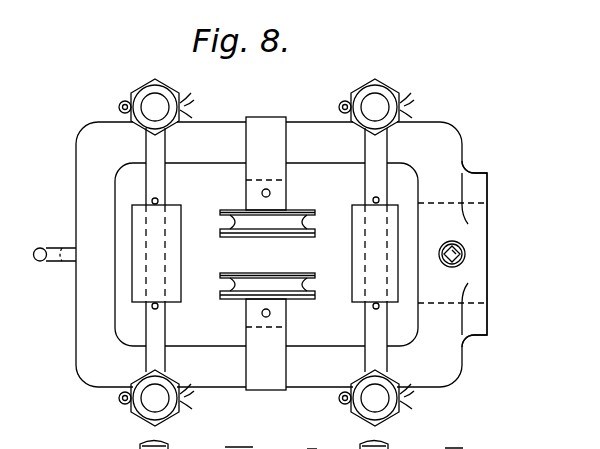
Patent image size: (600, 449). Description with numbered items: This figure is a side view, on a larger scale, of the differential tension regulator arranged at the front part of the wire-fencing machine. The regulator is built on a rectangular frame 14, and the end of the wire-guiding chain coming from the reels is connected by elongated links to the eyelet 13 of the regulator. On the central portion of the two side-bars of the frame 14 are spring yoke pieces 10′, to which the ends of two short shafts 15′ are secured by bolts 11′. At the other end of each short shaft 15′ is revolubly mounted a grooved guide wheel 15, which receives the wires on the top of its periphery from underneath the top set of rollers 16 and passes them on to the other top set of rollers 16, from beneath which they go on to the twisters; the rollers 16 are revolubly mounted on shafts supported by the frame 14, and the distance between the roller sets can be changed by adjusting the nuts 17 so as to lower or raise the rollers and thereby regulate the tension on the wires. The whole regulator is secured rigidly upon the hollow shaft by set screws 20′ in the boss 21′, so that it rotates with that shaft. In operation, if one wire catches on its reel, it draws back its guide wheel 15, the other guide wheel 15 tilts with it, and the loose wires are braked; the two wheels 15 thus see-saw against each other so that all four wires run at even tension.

The rectangular frame 14 is at (88, 153).
The nuts 17 is at (157, 100).
The spring yoke pieces 10′ is at (266, 253).
The bolts 11′ is at (270, 192).
The short shafts 15′ is at (278, 203).
The grooved guide wheel 15 is at (240, 287).
The rollers 16 is at (173, 277).
The boss 21′ is at (483, 193).
The set screws 20′ is at (465, 250).
The eyelet 13 is at (52, 263).